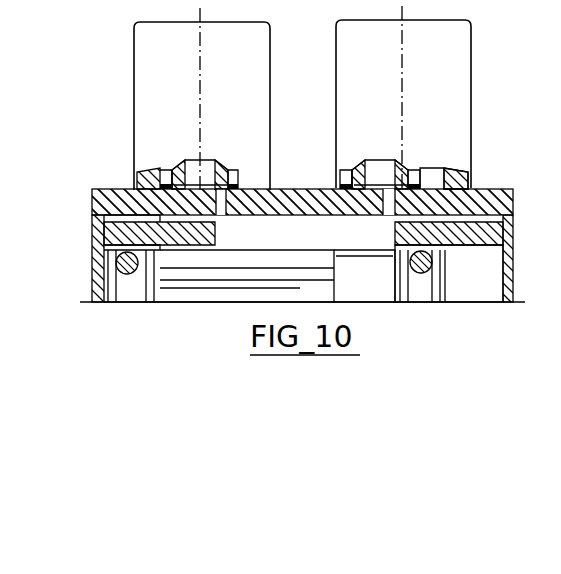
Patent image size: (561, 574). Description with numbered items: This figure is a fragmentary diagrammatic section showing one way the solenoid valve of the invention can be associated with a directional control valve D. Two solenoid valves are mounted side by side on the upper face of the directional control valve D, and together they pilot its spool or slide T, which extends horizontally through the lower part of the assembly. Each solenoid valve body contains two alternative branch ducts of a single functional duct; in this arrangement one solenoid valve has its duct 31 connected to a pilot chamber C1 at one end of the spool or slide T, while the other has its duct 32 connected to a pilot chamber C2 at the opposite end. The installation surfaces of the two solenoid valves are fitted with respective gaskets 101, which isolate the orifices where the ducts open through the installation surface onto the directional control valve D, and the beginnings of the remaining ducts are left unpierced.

The duct 31 is at (160, 170).
The gasket 101 is at (255, 183).
The duct 32 is at (452, 170).
The directional control valve D is at (490, 198).
The spool or slide T is at (248, 300).
The pilot chamber C1 is at (105, 283).
The pilot chamber C2 is at (490, 284).